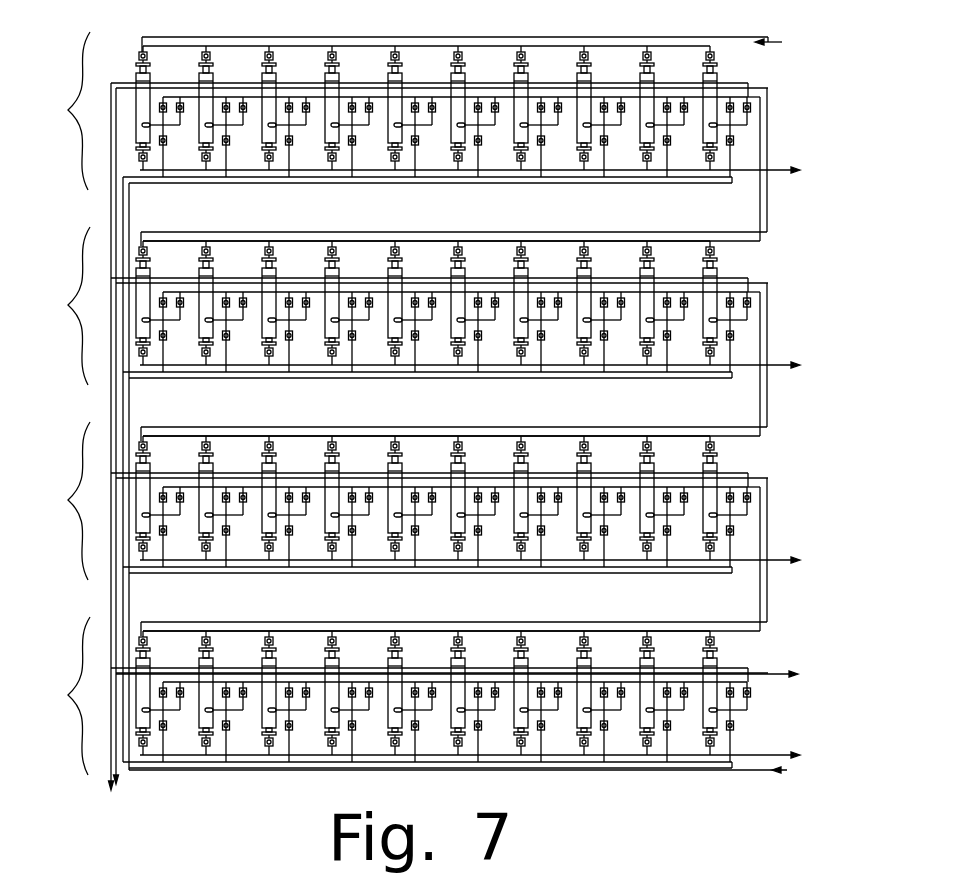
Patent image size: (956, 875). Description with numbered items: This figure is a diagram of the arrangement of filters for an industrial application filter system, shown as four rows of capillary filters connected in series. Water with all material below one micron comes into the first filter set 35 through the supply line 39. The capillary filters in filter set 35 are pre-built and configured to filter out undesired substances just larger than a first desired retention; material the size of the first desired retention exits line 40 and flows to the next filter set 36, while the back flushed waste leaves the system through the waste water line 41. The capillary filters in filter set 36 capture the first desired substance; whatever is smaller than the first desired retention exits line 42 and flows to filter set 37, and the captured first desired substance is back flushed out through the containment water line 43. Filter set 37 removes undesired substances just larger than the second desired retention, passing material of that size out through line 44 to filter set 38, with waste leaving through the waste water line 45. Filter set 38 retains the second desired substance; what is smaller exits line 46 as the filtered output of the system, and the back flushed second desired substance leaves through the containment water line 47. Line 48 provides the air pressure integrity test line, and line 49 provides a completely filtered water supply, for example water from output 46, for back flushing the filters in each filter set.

The filter set 35 is at (396, 111).
The filter set 36 is at (396, 306).
The filter set 37 is at (396, 501).
The filter set 38 is at (396, 696).
The supply line 39 is at (740, 42).
The line 40 is at (766, 149).
The waste water line 41 is at (772, 172).
The line 42 is at (763, 332).
The containment water line 43 is at (772, 368).
The line 44 is at (763, 533).
The waste water line 45 is at (772, 565).
The line 46 is at (765, 677).
The containment water line 47 is at (758, 757).
The air pressure integrity test line 48 is at (757, 770).
The completely filtered water supply line 49 is at (110, 753).